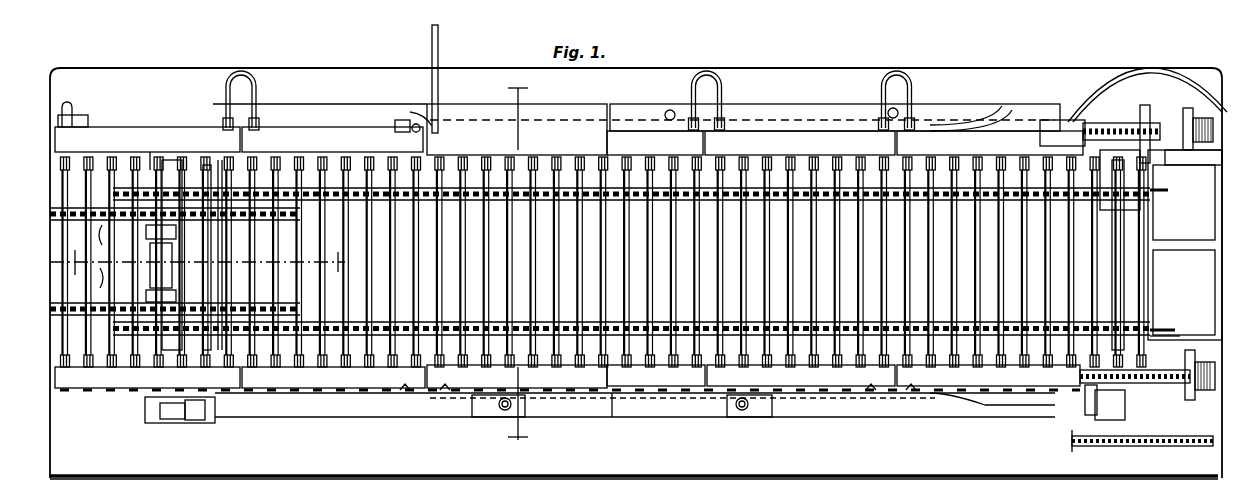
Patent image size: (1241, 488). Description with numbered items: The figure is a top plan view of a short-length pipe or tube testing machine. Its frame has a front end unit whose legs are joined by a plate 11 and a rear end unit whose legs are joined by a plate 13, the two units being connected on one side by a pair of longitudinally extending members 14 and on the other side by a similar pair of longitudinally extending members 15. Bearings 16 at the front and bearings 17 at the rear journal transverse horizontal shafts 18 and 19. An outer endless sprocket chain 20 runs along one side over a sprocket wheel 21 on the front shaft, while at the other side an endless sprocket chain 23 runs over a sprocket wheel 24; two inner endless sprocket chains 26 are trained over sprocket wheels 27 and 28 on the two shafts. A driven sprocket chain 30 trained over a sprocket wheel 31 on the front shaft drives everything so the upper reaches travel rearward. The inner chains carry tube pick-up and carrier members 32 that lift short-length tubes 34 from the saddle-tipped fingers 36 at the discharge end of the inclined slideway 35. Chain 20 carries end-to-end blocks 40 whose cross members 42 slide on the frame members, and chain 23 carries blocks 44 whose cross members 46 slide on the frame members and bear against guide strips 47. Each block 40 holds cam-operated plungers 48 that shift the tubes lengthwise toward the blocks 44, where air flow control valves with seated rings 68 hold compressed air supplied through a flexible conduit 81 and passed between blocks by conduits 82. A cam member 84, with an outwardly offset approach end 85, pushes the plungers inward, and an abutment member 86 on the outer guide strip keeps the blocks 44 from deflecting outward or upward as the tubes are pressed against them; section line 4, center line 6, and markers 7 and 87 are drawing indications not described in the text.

The section line 4- 4 is at (518, 264).
The center line 6- 6 is at (204, 262).
The roller bars 7 is at (684, 190).
The plate 11 is at (1060, 262).
The plate 13 is at (222, 237).
The longitudinally extending members 14 is at (992, 345).
The longitudinally extending members 15 is at (986, 104).
The bearings 16 is at (1140, 156).
The bearings 17 is at (150, 175).
The shaft 18 is at (1124, 218).
The shaft 19 is at (172, 272).
The endless sprocket chain 20 is at (1092, 385).
The sprocket wheel 21 is at (1152, 383).
The endless sprocket chain 23 is at (1098, 123).
The sprocket wheel 24 is at (1062, 133).
The endless sprocket chains 26 is at (566, 188).
The sprocket wheels 27 is at (1166, 191).
The sprocket wheels 28 is at (114, 188).
The sprocket chain 30 is at (1170, 446).
The sprocket wheel 31 is at (1072, 442).
The tube pick-up and carrier members 32 is at (1178, 333).
The short-length tubes 34 is at (676, 345).
The slideway 35 is at (1222, 226).
The fingers 36 is at (1188, 258).
The blocks 40 is at (1187, 403).
The cross members 42 is at (446, 392).
The blocks 44 is at (1147, 99).
The cross members 46 is at (395, 123).
The guide strips 47 is at (494, 175).
The cam-operated plungers 48 is at (812, 405).
The rings 68 is at (101, 256).
The flexible conduit 81 is at (431, 41).
The flexible conduit 82 is at (258, 90).
The cam member 84 is at (628, 402).
The offset approach end 85 is at (757, 400).
The abutment member 86 is at (792, 130).
The vertical drive assembly 87 is at (180, 236).